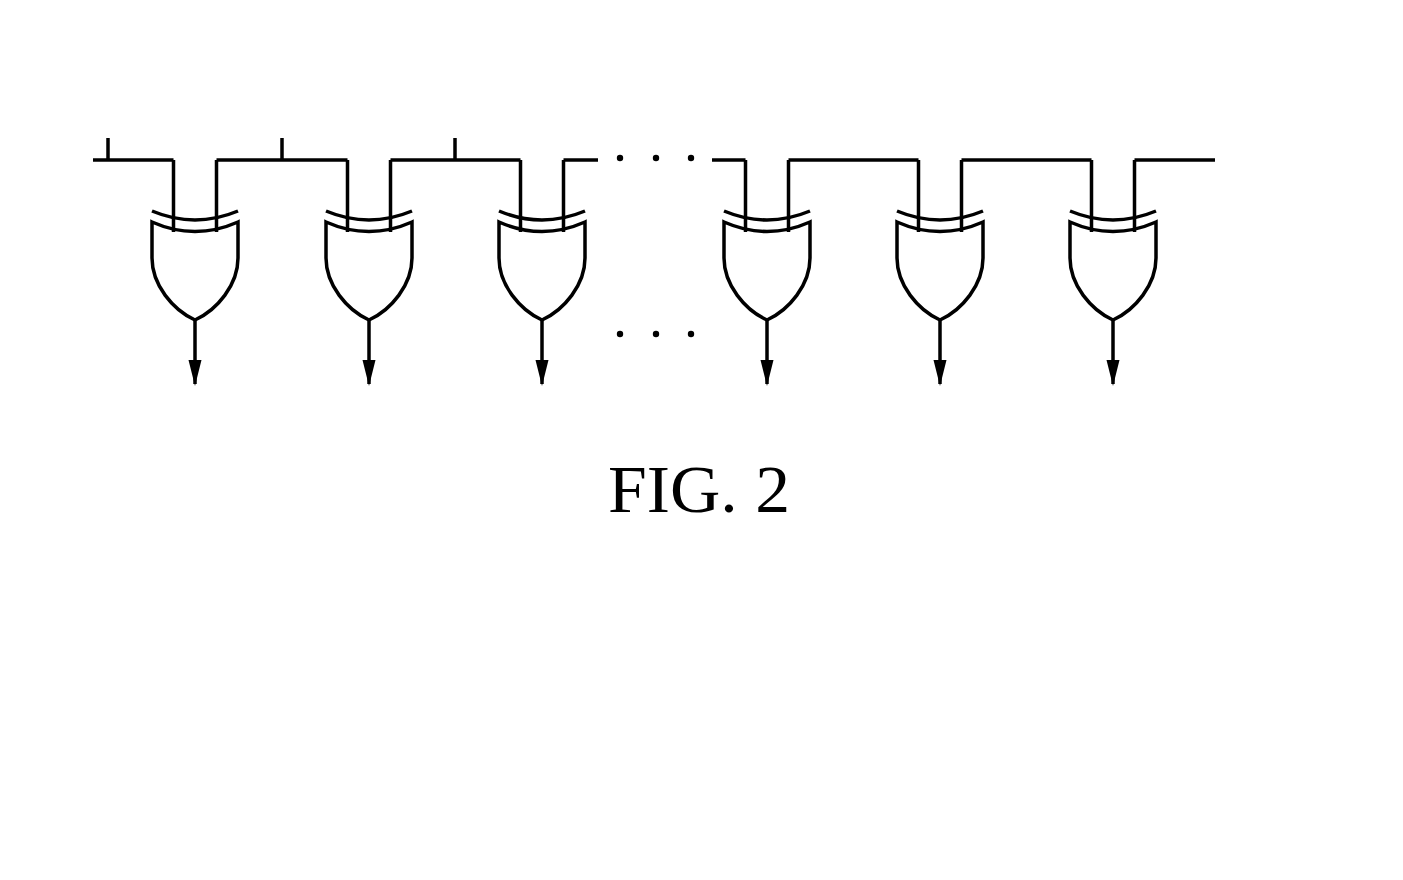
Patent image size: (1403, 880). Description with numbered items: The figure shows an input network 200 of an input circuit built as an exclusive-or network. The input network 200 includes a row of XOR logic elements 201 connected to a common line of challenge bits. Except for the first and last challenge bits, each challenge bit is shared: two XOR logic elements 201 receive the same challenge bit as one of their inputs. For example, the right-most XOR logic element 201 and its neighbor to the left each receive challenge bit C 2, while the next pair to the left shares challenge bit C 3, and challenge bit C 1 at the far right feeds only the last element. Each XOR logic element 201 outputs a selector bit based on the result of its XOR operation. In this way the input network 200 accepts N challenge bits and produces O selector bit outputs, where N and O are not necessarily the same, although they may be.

The input network 200 is at (1272, 416).
The XOR logic element 201 is at (166, 278).
The challenge bit C3 3 is at (853, 160).
The challenge bit C2 2 is at (1027, 160).
The challenge bit C1 1 is at (1202, 160).